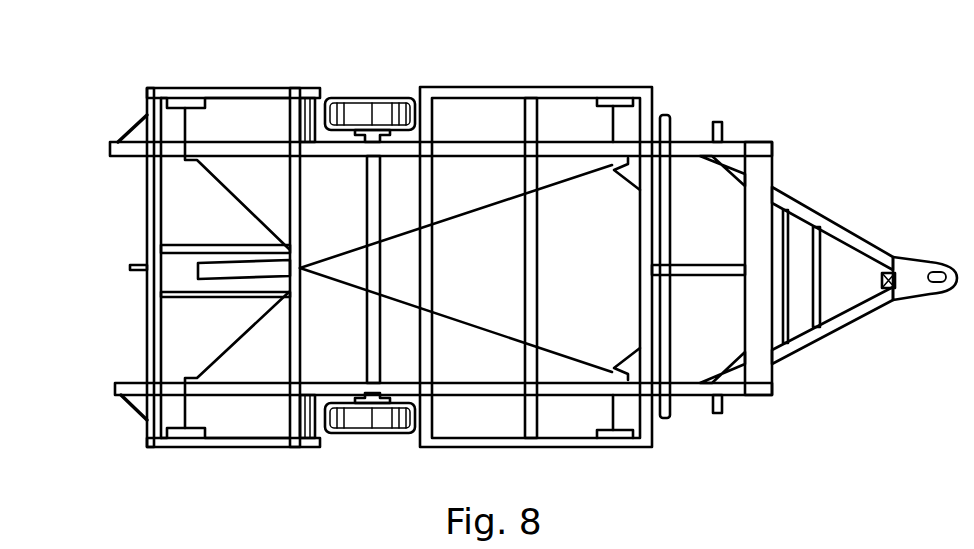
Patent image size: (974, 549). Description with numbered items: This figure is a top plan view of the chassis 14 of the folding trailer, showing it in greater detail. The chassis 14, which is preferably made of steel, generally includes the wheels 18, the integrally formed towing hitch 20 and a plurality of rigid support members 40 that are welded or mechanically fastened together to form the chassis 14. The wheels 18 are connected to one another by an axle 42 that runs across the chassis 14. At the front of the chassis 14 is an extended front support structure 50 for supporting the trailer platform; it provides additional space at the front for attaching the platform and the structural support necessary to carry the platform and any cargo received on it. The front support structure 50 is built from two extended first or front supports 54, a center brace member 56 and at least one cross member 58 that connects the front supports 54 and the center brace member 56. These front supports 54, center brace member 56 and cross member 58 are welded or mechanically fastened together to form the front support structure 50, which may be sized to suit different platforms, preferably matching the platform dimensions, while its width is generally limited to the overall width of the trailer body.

The chassis 14 is at (108, 103).
The wheels 18 is at (358, 107).
The towing hitch 20 is at (908, 277).
The rigid support members 40 is at (514, 136).
The axle 42 is at (366, 229).
The extended front support structure 50 is at (752, 113).
The front supports 54 is at (685, 152).
The center brace member 56 is at (693, 276).
The cross member 58 is at (760, 375).